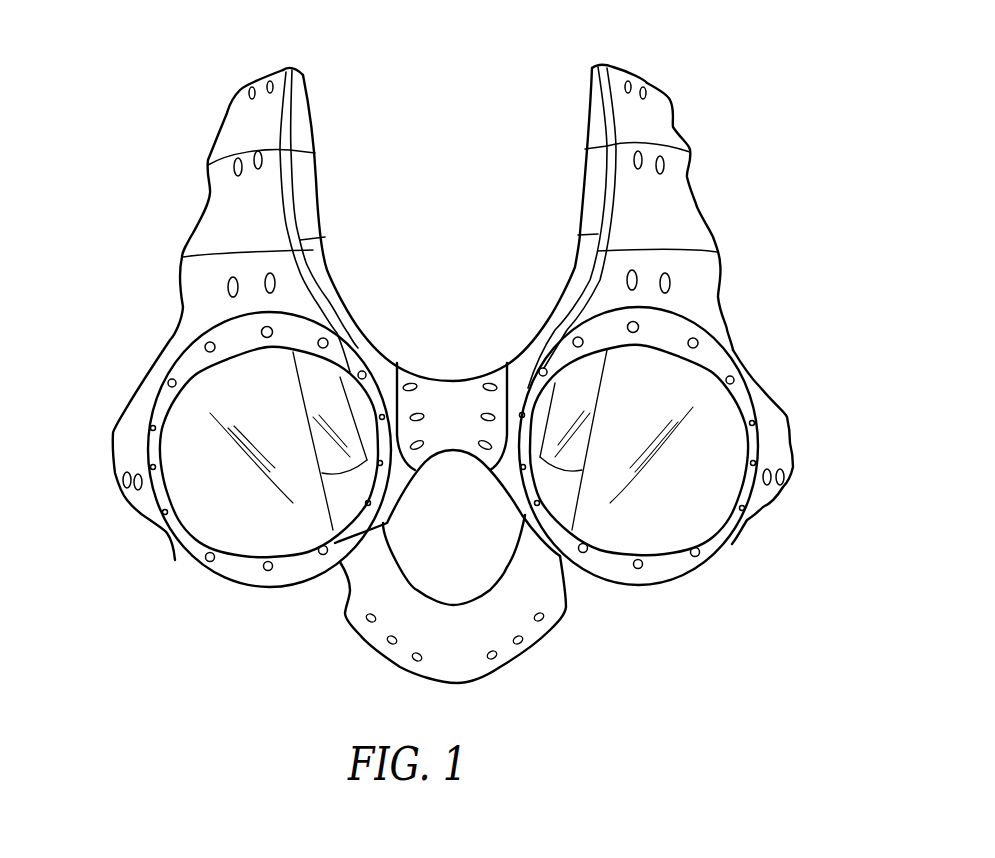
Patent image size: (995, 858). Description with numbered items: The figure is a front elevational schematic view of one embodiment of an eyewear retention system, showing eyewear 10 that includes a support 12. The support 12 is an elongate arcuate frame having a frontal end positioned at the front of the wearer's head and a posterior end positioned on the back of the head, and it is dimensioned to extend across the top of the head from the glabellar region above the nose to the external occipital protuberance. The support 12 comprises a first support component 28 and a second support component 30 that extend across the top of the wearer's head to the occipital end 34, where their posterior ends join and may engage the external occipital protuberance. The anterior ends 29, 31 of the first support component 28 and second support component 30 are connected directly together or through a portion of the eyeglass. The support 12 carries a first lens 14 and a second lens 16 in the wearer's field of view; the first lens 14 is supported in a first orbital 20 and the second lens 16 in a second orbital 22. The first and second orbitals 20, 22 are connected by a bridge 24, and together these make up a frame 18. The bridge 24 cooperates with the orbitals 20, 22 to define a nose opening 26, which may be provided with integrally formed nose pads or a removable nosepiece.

The eyewear 10 is at (187, 125).
The support 12 is at (555, 62).
The first lens 14 is at (217, 512).
The second lens 16 is at (687, 506).
The frame 18 is at (376, 311).
The first orbital 20 is at (243, 565).
The second orbital 22 is at (670, 565).
The bridge 24 is at (460, 408).
The nose opening 26 is at (432, 484).
The first support component 28 is at (237, 210).
The anterior end of first support component 29 is at (138, 334).
The second support component 30 is at (663, 195).
The anterior end of second support component 31 is at (728, 288).
The occipital end 34 is at (525, 657).